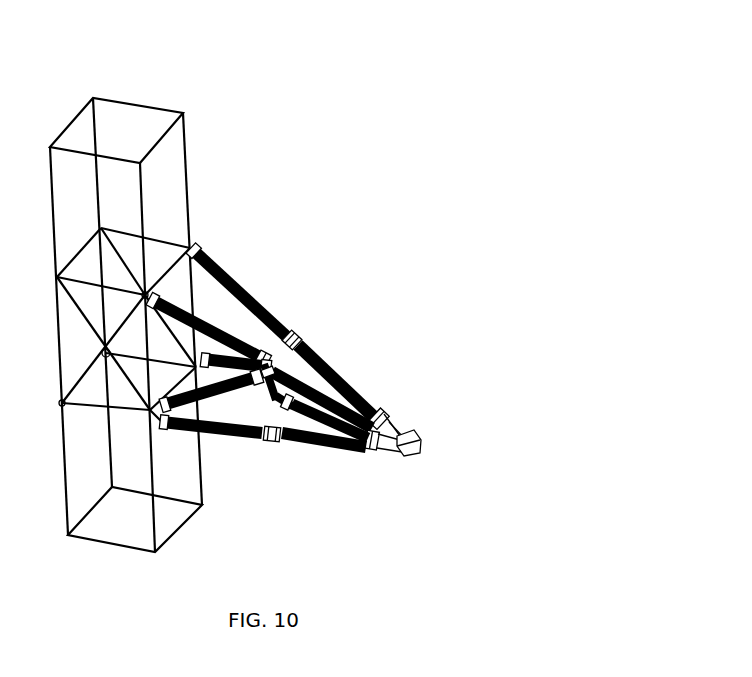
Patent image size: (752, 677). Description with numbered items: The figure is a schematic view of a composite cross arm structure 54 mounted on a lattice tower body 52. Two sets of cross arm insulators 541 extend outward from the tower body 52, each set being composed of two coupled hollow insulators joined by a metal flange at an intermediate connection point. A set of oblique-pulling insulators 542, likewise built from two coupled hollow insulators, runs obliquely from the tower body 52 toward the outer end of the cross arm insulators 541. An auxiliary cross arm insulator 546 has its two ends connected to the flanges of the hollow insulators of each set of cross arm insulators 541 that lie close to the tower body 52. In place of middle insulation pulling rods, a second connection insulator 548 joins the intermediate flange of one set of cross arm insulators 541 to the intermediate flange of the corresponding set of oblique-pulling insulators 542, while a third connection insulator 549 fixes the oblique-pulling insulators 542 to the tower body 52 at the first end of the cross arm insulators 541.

The tower body 52 is at (216, 303).
The composite cross arm structure 54 is at (378, 382).
The cross arm insulator 541 is at (217, 438).
The oblique-pulling insulator 542 is at (336, 368).
The auxiliary cross arm insulator 546 is at (354, 465).
The second connection insulator 548 is at (274, 319).
The third connection insulator 549 is at (293, 276).